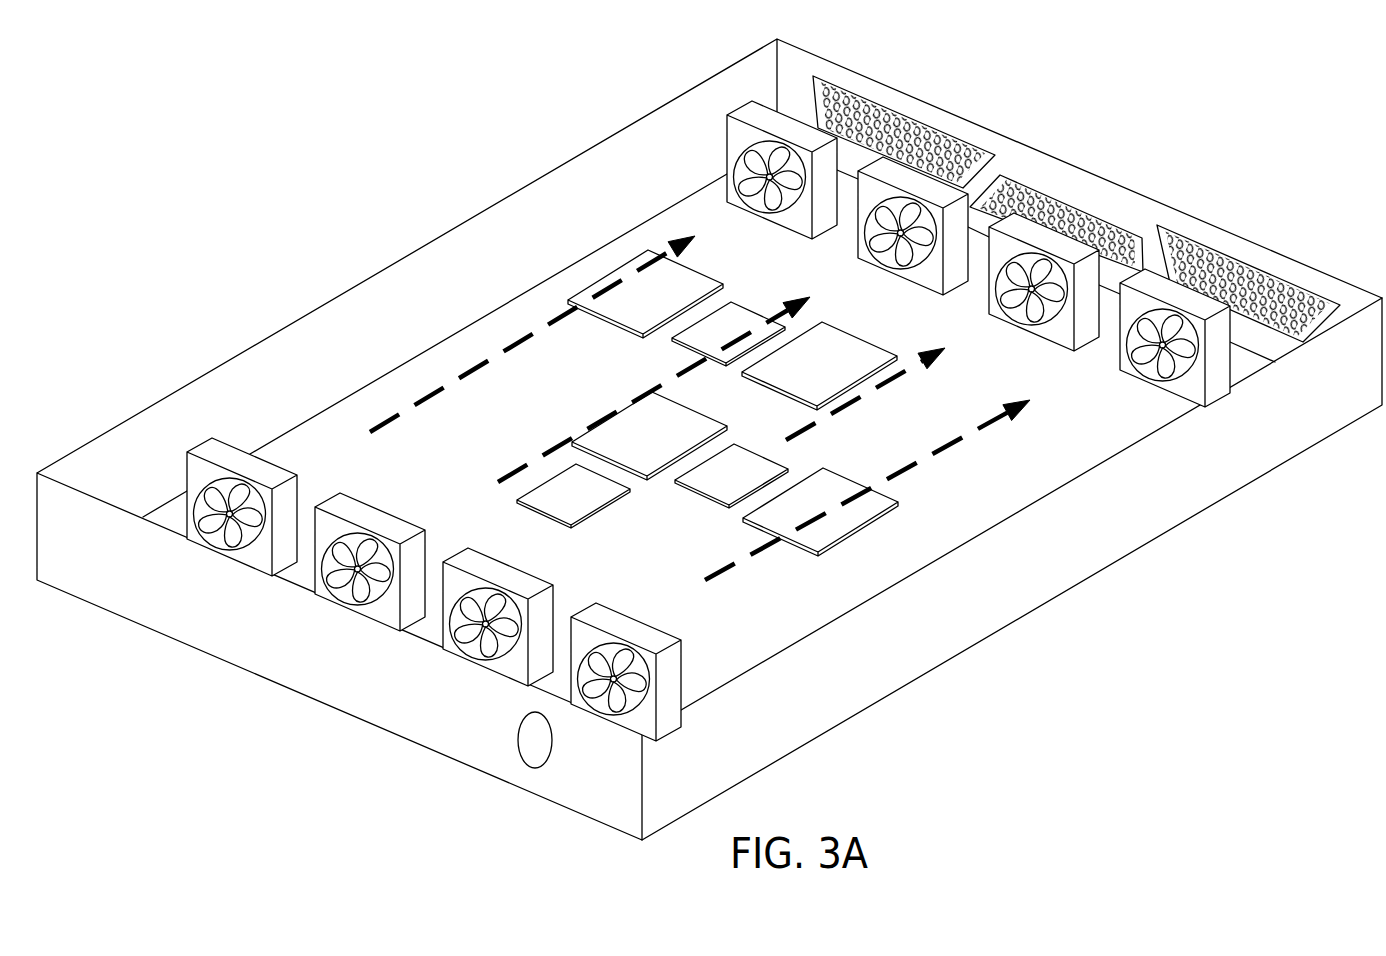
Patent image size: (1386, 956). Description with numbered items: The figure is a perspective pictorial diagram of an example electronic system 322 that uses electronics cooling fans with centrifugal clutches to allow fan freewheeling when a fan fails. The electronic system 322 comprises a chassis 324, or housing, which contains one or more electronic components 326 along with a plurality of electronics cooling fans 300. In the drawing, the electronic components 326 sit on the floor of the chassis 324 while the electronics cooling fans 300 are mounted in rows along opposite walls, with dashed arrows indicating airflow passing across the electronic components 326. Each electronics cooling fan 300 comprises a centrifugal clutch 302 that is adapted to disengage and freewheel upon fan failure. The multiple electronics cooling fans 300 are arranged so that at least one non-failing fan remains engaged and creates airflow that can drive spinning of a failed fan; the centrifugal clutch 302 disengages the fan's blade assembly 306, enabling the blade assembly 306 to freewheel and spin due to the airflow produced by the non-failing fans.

The electronics cooling fan 300 is at (890, 167).
The centrifugal clutch 302 is at (882, 255).
The blade assembly 306 is at (880, 258).
The electronic system 322 is at (1113, 658).
The chassis 324 is at (1150, 525).
The electronic component 326 is at (590, 488).